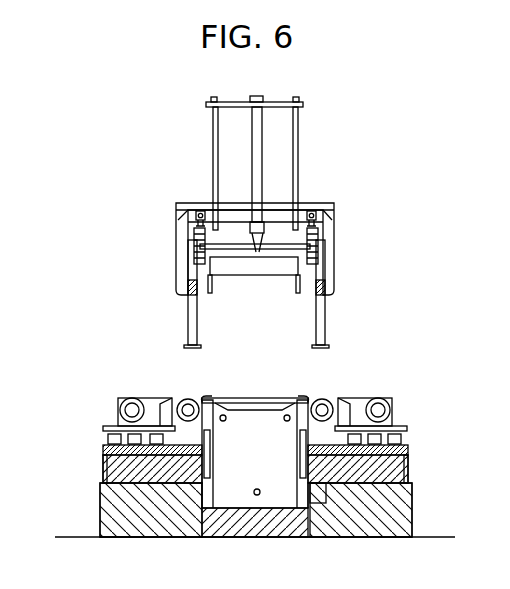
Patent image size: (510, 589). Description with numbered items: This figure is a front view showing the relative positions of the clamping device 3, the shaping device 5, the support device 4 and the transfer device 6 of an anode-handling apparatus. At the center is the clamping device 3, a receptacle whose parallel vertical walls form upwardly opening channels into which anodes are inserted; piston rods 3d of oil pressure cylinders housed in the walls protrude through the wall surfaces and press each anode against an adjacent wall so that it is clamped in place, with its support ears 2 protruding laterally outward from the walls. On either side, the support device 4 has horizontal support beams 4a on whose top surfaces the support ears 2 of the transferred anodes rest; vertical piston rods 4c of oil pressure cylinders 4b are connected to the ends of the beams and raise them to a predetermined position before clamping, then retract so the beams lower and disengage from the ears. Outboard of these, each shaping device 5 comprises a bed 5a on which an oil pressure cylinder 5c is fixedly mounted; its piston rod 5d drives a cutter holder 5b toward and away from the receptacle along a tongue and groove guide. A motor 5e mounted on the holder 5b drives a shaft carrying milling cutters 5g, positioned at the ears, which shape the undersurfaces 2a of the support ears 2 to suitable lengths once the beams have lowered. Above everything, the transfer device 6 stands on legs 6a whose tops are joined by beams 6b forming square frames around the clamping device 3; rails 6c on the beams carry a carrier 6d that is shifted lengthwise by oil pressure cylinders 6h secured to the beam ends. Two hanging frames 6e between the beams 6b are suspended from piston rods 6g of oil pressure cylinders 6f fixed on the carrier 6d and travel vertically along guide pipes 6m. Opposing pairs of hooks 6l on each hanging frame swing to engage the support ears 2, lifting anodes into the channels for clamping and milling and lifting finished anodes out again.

The support ear 2 is at (272, 427).
The undersurface of support ear 2a is at (208, 398).
The clamping device 3 is at (255, 422).
The piston rod 3d is at (257, 488).
The support device 4 is at (256, 501).
The support beam 4a is at (255, 469).
The oil pressure cylinder 4b is at (272, 552).
The piston rod 4c is at (212, 440).
The shaping device 5 is at (246, 440).
The bed 5a is at (104, 468).
The cutter holder 5b is at (104, 428).
The oil pressure cylinder 5c is at (104, 451).
The piston rod 5d is at (330, 488).
The motor 5e is at (124, 402).
The milling cutter 5g is at (190, 399).
The transfer device 6 is at (340, 236).
The leg 6a is at (188, 331).
The beam 6b is at (190, 290).
The rail 6c is at (194, 262).
The carrier 6d is at (276, 243).
The hanging frame 6e is at (257, 276).
The oil pressure cylinder 6f is at (263, 122).
The piston rod 6g is at (237, 243).
The oil pressure cylinder 6h is at (197, 216).
The hook 6l is at (212, 282).
The guide pipe 6m is at (213, 129).